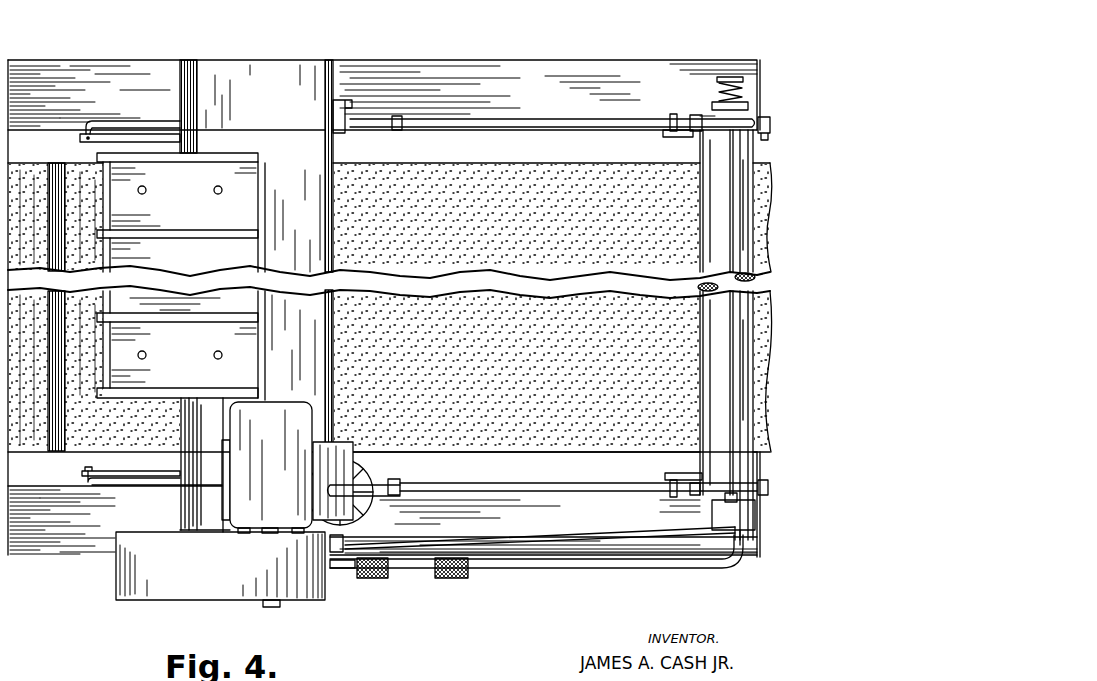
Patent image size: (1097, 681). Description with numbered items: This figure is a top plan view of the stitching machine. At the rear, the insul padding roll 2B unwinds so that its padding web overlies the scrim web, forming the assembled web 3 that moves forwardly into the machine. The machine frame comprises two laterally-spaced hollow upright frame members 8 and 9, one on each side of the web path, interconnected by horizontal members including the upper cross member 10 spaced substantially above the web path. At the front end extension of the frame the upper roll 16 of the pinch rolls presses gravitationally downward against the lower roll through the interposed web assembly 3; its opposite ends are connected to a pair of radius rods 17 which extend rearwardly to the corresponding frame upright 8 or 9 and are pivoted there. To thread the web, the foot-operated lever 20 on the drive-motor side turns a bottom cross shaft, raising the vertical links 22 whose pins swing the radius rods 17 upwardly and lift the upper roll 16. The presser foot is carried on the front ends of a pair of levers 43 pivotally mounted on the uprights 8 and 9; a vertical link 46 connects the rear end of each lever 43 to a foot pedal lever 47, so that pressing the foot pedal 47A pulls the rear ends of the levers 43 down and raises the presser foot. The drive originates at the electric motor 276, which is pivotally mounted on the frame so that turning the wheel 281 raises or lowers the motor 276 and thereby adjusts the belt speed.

The roll of insul padding 2B is at (23, 453).
The assembled web 3 is at (516, 437).
The upright frame member 8 is at (212, 519).
The upright frame member 9 is at (268, 109).
The upper cross member 10 is at (298, 223).
The upper roll 16 is at (707, 322).
The radius rod 17 is at (490, 126).
The foot-operated lever 20 is at (582, 570).
The vertical link 22 is at (683, 137).
The presser foot lever 43 is at (97, 150).
The vertical link 46 is at (133, 121).
The foot pedal lever 47 is at (337, 570).
The foot pedal 47A is at (371, 578).
The electric motor 276 is at (272, 472).
The wheel 281 is at (360, 470).